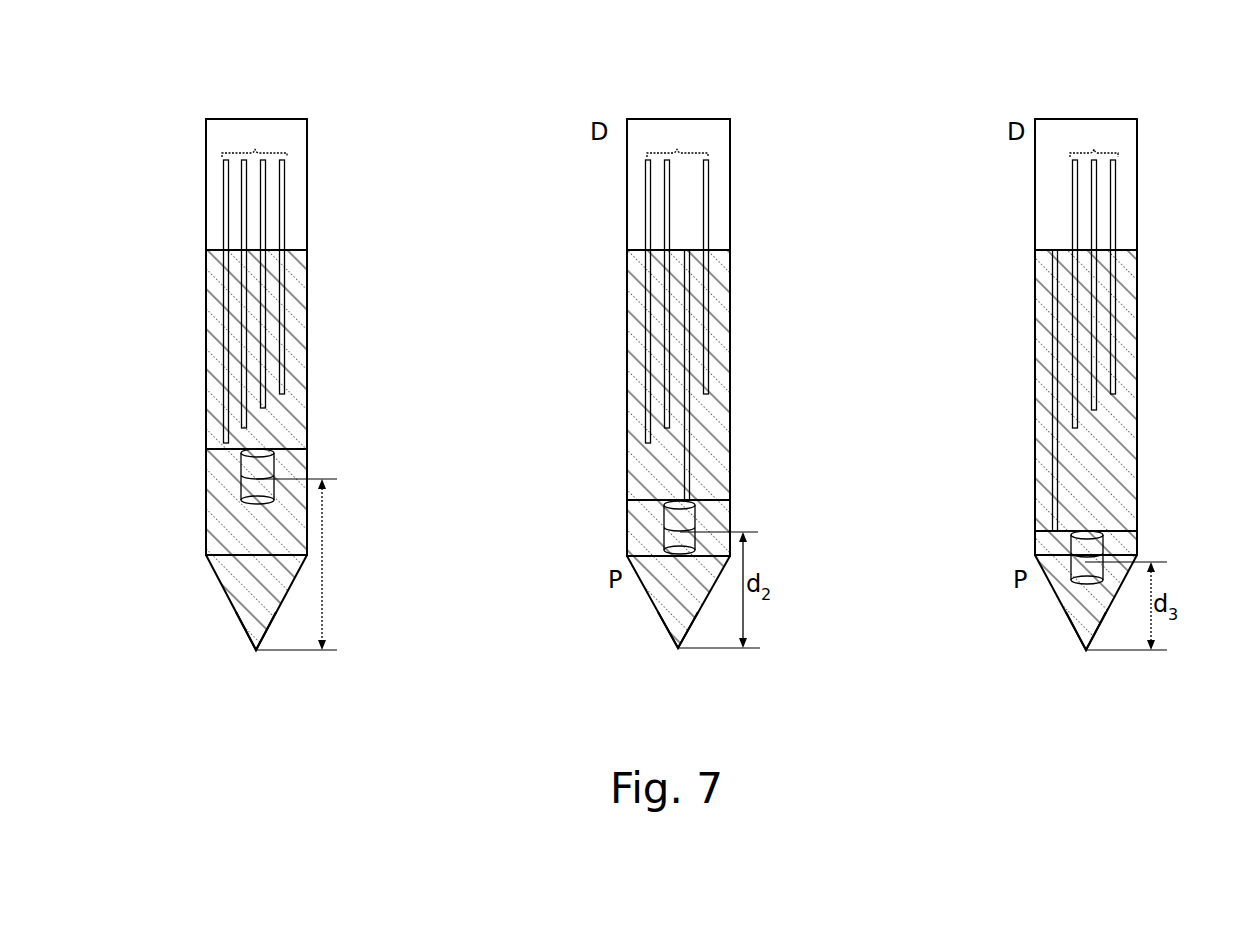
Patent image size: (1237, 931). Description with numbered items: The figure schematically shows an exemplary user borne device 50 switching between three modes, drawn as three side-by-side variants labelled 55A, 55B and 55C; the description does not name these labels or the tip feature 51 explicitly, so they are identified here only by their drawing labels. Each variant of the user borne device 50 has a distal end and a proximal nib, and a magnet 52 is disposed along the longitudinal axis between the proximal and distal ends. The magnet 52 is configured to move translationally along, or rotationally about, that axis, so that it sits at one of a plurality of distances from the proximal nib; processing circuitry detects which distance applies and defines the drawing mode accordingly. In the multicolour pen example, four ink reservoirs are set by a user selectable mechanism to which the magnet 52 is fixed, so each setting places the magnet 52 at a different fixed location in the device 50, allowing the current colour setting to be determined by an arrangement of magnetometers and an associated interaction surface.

The user borne device 50 is at (308, 172).
The tip 51 is at (256, 652).
The magnet 52 is at (262, 466).
The first electrode arrangement 55A is at (256, 150).
The second electrode arrangement 55B is at (677, 150).
The third electrode arrangement 55C is at (1094, 150).